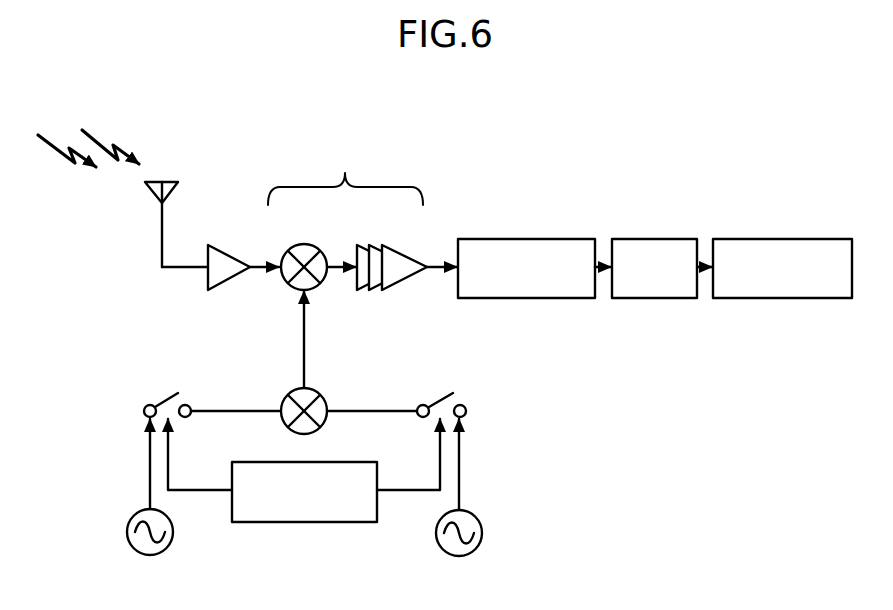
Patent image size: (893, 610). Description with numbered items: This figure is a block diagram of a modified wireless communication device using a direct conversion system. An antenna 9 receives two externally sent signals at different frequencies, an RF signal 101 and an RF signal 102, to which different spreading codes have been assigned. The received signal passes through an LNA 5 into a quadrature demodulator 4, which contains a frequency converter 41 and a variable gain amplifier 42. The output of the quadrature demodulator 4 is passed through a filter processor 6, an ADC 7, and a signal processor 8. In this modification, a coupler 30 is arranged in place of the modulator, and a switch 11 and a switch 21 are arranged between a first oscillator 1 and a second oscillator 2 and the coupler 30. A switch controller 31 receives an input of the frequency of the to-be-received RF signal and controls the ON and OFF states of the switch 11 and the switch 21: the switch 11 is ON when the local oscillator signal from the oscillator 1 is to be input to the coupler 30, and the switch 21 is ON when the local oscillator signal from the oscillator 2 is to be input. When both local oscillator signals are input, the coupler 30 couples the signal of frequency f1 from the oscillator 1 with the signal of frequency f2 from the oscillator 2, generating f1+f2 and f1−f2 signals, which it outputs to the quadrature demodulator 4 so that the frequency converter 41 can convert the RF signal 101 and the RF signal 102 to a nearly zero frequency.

The RF signal 101 is at (55, 141).
The RF signal 102 is at (122, 141).
The antenna 9 is at (174, 180).
The LNA (Low Noise Amplifier) 5 is at (233, 246).
The quadrature demodulator 4 is at (345, 173).
The frequency converter 41 is at (305, 243).
The variable gain amplifier 42 is at (399, 244).
The filter processor 6 is at (506, 238).
The ADC (Analog Digital Converter) 7 is at (654, 238).
The signal processor 8 is at (785, 238).
The switch 11 is at (158, 392).
The switch 21 is at (432, 394).
The coupler 30 is at (320, 394).
The switch controller 31 is at (334, 461).
The first oscillator 1 is at (127, 532).
The second oscillator 2 is at (436, 533).